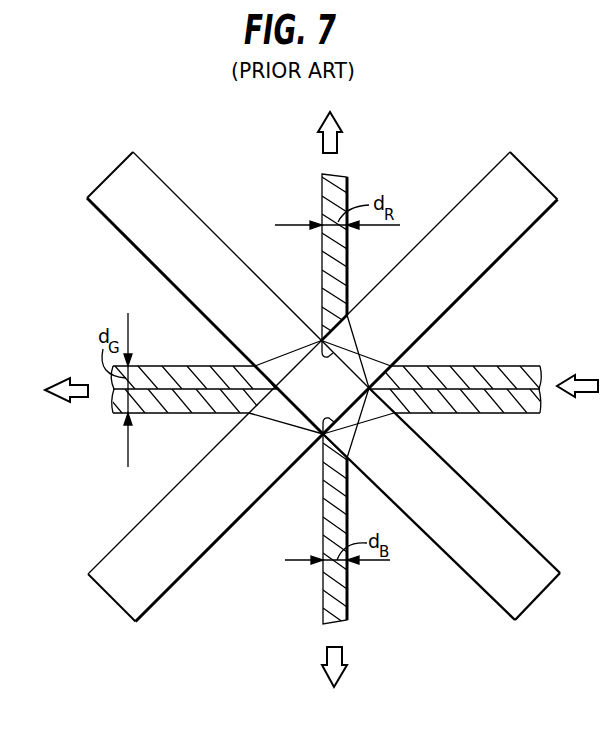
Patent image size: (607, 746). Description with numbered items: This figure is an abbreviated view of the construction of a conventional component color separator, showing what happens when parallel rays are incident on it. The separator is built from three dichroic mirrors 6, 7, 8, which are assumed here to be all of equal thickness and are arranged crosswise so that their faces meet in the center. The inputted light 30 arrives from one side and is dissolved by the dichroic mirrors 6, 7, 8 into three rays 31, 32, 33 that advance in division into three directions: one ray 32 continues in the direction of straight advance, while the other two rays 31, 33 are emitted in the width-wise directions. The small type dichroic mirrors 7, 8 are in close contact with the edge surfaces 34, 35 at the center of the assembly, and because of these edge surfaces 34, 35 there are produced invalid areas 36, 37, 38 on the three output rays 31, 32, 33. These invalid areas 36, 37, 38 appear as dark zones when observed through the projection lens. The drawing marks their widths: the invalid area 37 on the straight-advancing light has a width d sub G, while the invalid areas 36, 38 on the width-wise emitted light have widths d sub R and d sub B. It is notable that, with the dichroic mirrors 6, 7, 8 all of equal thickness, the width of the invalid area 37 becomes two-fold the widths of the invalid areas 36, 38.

The dichroic mirror 6 is at (115, 167).
The dichroic mirror 7 is at (542, 180).
The dichroic mirror 8 is at (115, 602).
The inputted light 30 is at (597, 378).
The ray 31 is at (338, 140).
The ray 32 is at (75, 380).
The ray 33 is at (346, 655).
The edge surface 34 is at (322, 340).
The edge surface 35 is at (324, 436).
The invalid area 36 is at (322, 215).
The invalid area 37 is at (158, 366).
The invalid area 38 is at (323, 577).